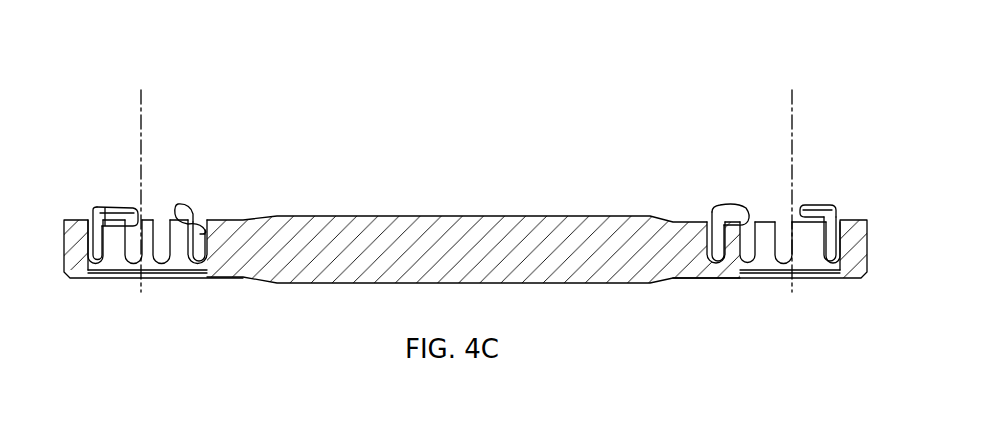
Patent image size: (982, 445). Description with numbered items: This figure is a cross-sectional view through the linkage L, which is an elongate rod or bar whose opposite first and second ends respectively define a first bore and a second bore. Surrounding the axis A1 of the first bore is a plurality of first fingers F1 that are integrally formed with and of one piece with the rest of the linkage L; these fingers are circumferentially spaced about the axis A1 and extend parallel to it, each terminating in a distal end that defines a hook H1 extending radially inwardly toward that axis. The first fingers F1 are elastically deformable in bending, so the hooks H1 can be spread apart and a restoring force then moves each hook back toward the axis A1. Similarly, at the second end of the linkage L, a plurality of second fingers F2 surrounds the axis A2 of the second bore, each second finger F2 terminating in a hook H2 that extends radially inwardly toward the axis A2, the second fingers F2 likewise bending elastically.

The linkage L is at (313, 279).
The first fingers F1 is at (95, 208).
The hook H1 is at (139, 207).
The second fingers F2 is at (722, 226).
The hook H2 is at (748, 212).
The axis A1 is at (141, 111).
The axis A2 is at (793, 108).